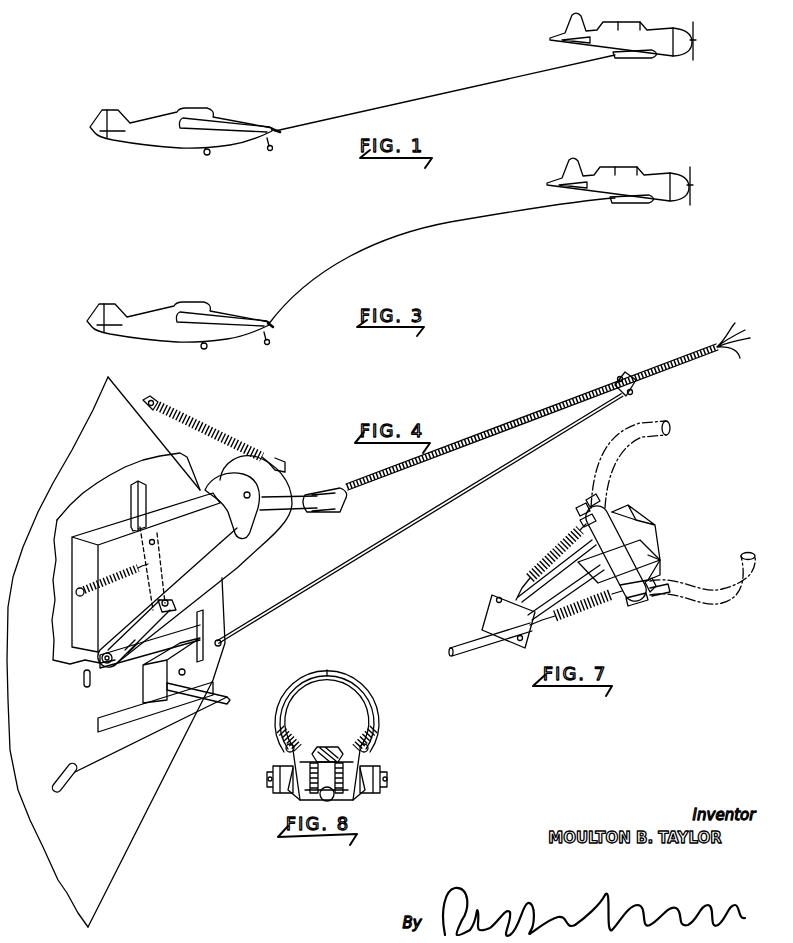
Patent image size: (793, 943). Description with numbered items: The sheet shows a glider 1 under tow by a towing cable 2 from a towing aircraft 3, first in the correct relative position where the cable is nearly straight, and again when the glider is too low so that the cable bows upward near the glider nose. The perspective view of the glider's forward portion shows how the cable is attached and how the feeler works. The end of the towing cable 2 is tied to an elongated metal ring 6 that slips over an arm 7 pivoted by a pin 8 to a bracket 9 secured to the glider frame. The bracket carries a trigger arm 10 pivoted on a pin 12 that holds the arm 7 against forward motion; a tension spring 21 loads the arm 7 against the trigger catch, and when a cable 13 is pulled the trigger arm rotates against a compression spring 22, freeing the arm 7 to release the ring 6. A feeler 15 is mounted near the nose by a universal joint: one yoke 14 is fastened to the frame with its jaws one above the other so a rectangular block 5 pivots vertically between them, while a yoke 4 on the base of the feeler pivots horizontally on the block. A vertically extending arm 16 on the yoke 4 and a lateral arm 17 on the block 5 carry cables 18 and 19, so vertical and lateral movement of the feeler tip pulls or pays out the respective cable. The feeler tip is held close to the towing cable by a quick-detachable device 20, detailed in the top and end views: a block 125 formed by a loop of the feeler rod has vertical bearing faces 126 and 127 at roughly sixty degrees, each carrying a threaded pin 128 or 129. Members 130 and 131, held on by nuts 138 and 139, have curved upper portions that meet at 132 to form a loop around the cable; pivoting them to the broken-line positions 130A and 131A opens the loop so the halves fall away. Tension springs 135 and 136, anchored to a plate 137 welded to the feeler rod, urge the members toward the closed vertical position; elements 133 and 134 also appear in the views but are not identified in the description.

In FIG. 1, the glider 1 is at (181, 131).
In FIG. 3, the glider 1 is at (178, 325).
In FIG. 1, the towing cable 2 is at (445, 93).
In FIG. 3, the towing cable 2 is at (441, 261).
In FIG. 4, the towing cable 2 is at (548, 406).
In FIG. 1, the towing aircraft 3 is at (623, 32).
In FIG. 3, the towing aircraft 3 is at (620, 178).
In FIG. 4, the yoke 4 is at (218, 652).
In FIG. 4, the rectangular block 5 is at (186, 673).
In FIG. 4, the elongated metal ring 6 is at (297, 512).
In FIG. 4, the arm 7 is at (293, 487).
In FIG. 4, the pin 8 is at (245, 498).
In FIG. 4, the bracket 9 is at (124, 520).
In FIG. 4, the trigger arm 10 is at (145, 500).
In FIG. 4, the pin 12 is at (155, 542).
In FIG. 4, the cable 13 is at (136, 631).
In FIG. 4, the yoke 14 is at (143, 688).
In FIG. 1, the feeler 15 is at (279, 131).
In FIG. 3, the feeler 15 is at (272, 326).
In FIG. 4, the feeler 15 is at (349, 583).
In FIG. 7, the feeler 15 is at (477, 628).
In FIG. 8, the feeler 15 is at (342, 745).
In FIG. 4, the vertically extending arm 16 is at (205, 640).
In FIG. 4, the arm 17 is at (222, 690).
In FIG. 4, the cable 18 is at (168, 620).
In FIG. 4, the cable 19 is at (91, 778).
In FIG. 4, the quick-detachable device 20 is at (622, 375).
In FIG. 4, the tension spring 21 is at (214, 434).
In FIG. 4, the compression spring 22 is at (100, 592).
In FIG. 7, the block 125 is at (630, 518).
In FIG. 8, the block 125 is at (342, 800).
In FIG. 7, the bearing face 126 is at (612, 508).
In FIG. 7, the bearing face 127 is at (660, 565).
In FIG. 7, the pin 128 is at (578, 512).
In FIG. 8, the pin 128 is at (268, 782).
In FIG. 7, the pin 129 is at (640, 608).
In FIG. 8, the pin 129 is at (387, 777).
In FIG. 7, the member 130 is at (580, 524).
In FIG. 8, the member 130 is at (278, 723).
In FIG. 7, the broken-line position of member 130A is at (657, 422).
In FIG. 7, the member 131 is at (628, 588).
In FIG. 8, the member 131 is at (372, 693).
In FIG. 7, the broken-line position of member 131A is at (722, 607).
In FIG. 7, the meeting point of members 132 is at (630, 557).
In FIG. 8, the meeting point of members 132 is at (329, 672).
In FIG. 7, the arm 133 is at (603, 505).
In FIG. 8, the arm 133 is at (298, 797).
In FIG. 7, the fitting 134 is at (651, 585).
In FIG. 8, the fitting 134 is at (353, 803).
In FIG. 7, the tension spring 135 is at (538, 556).
In FIG. 8, the tension spring 135 is at (287, 733).
In FIG. 7, the tension spring 136 is at (593, 614).
In FIG. 8, the tension spring 136 is at (378, 730).
In FIG. 7, the plate 137 is at (513, 647).
In FIG. 8, the plate 137 is at (313, 743).
In FIG. 7, the nut 138 is at (592, 496).
In FIG. 8, the nut 138 is at (283, 755).
In FIG. 7, the nut 139 is at (663, 607).
In FIG. 8, the nut 139 is at (363, 760).